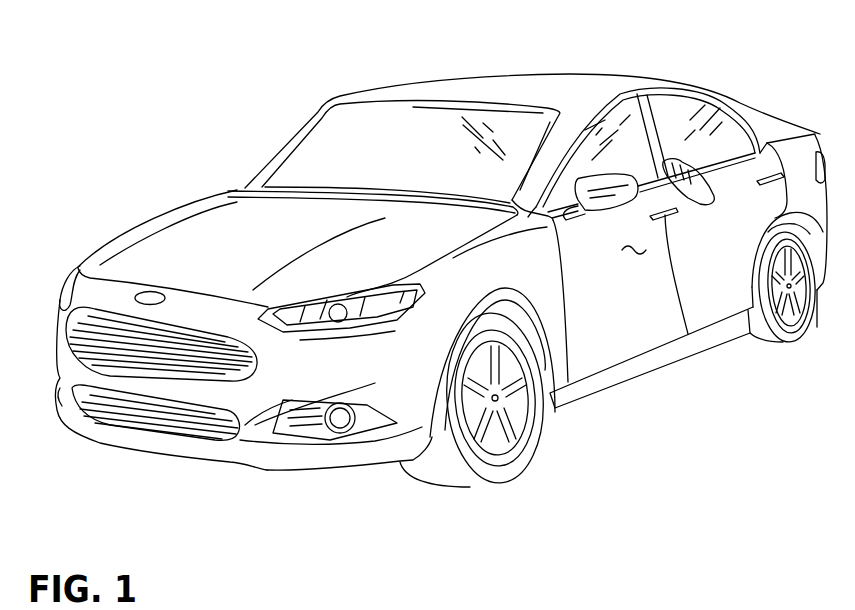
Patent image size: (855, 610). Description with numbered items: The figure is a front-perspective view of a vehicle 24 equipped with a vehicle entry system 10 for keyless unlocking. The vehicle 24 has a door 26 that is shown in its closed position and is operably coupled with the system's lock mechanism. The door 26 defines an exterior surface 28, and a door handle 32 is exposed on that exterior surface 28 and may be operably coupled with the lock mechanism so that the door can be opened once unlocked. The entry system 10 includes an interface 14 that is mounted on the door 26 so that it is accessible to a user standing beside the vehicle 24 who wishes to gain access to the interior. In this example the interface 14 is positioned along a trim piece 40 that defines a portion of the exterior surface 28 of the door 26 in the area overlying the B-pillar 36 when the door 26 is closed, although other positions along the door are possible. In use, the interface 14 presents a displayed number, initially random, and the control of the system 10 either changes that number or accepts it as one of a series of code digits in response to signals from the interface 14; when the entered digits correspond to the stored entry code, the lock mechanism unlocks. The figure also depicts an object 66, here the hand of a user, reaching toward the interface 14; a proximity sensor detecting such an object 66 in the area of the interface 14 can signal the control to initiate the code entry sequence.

The vehicle entry system 10 is at (696, 157).
The interface 14 is at (648, 168).
The vehicle 24 is at (418, 74).
The door 26 is at (657, 317).
The exterior surface 28 is at (628, 252).
The door handle 32 is at (668, 192).
The B-pillar 36 is at (668, 118).
The trim piece 40 is at (662, 157).
The object 66 is at (767, 142).